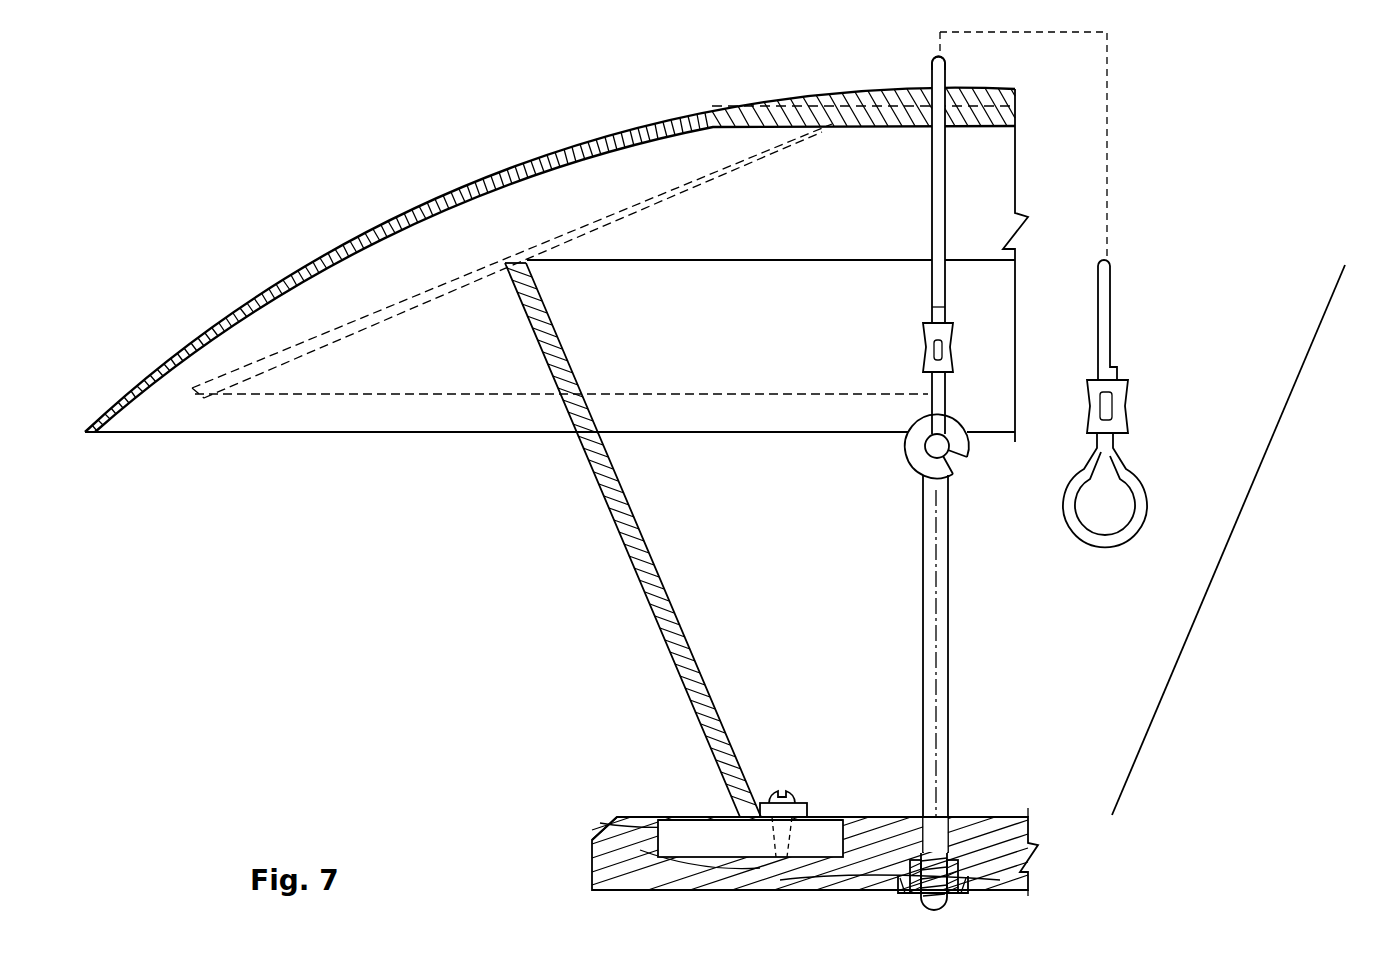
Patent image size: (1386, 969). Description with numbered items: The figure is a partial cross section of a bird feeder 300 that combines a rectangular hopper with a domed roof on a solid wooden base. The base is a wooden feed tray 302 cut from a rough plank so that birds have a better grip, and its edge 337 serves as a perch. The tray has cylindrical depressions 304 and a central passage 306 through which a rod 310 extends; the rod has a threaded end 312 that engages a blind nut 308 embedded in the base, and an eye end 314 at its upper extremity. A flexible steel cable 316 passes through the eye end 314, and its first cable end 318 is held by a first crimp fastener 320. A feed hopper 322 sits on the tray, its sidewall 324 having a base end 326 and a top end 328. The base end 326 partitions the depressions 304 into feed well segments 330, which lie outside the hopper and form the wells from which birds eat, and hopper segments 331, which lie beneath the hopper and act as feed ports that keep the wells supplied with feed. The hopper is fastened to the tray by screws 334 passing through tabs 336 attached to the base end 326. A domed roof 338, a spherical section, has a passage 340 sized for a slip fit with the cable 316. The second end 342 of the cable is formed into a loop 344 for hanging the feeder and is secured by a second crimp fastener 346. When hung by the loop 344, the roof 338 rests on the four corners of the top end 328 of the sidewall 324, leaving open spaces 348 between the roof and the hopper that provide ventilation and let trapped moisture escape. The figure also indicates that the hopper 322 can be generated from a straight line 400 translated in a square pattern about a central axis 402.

The bird feeder 300 is at (250, 257).
The wooden feed tray 302 is at (548, 822).
The cylindrical depressions 304 is at (747, 820).
The central passage 306 is at (950, 815).
The blind nut 308 is at (953, 893).
The rod 310 is at (920, 588).
The threaded end 312 is at (920, 900).
The eye end 314 is at (905, 462).
The flexible steel cable 316 is at (930, 193).
The first cable end 318 is at (928, 388).
The first crimp fastener 320 is at (922, 348).
The feed hopper 322 is at (595, 541).
The sidewall 324 is at (652, 597).
The base end 326 is at (700, 812).
The top end 328 is at (508, 262).
The feed well segments 330 is at (708, 842).
The hopper segments 331 is at (815, 842).
The screws 334 is at (778, 787).
The tabs 336 is at (805, 803).
The edge 337 is at (600, 826).
The domed roof 338 is at (380, 215).
The passage 340 is at (928, 87).
The second end 342 is at (1120, 298).
The loop 344 is at (1143, 473).
The second crimp fastener 346 is at (1130, 383).
The open spaces 348 is at (513, 259).
The straight line 400 is at (1188, 635).
The central axis 402 is at (935, 625).